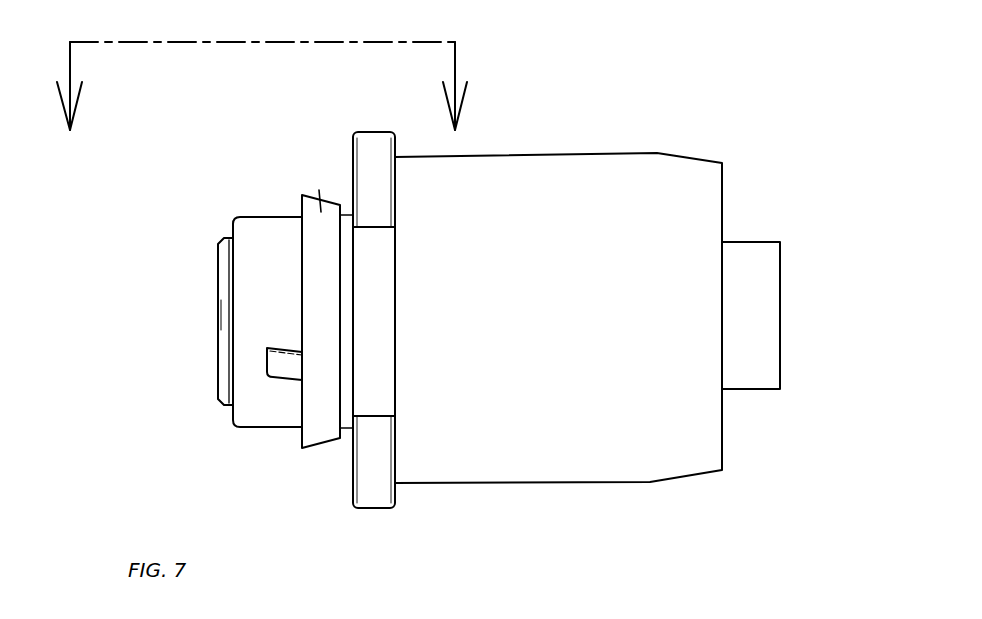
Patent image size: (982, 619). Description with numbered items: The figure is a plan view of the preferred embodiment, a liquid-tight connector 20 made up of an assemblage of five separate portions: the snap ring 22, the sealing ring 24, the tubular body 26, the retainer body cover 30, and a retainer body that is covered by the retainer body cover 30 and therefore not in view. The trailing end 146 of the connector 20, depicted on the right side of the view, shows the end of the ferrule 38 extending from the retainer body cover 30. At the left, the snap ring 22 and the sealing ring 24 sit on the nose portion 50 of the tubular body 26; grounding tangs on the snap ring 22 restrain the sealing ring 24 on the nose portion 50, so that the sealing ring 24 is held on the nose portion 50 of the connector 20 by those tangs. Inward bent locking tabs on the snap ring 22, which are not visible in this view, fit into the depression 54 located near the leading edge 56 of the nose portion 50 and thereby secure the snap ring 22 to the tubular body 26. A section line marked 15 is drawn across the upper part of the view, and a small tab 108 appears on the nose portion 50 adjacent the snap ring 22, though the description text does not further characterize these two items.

The section line 15- 15 is at (262, 86).
The liquid-tight connector 20 is at (559, 138).
The snap ring 22 is at (280, 286).
The sealing ring 24 is at (320, 197).
The tubular body 26 is at (226, 271).
The retainer body cover 30 is at (569, 331).
The ferrule 38 is at (763, 323).
The nose portion 50 is at (226, 237).
The depression 54 is at (228, 414).
The leading edge 56 is at (220, 312).
The latch tab 108 is at (268, 362).
The trailing end 146 is at (781, 271).